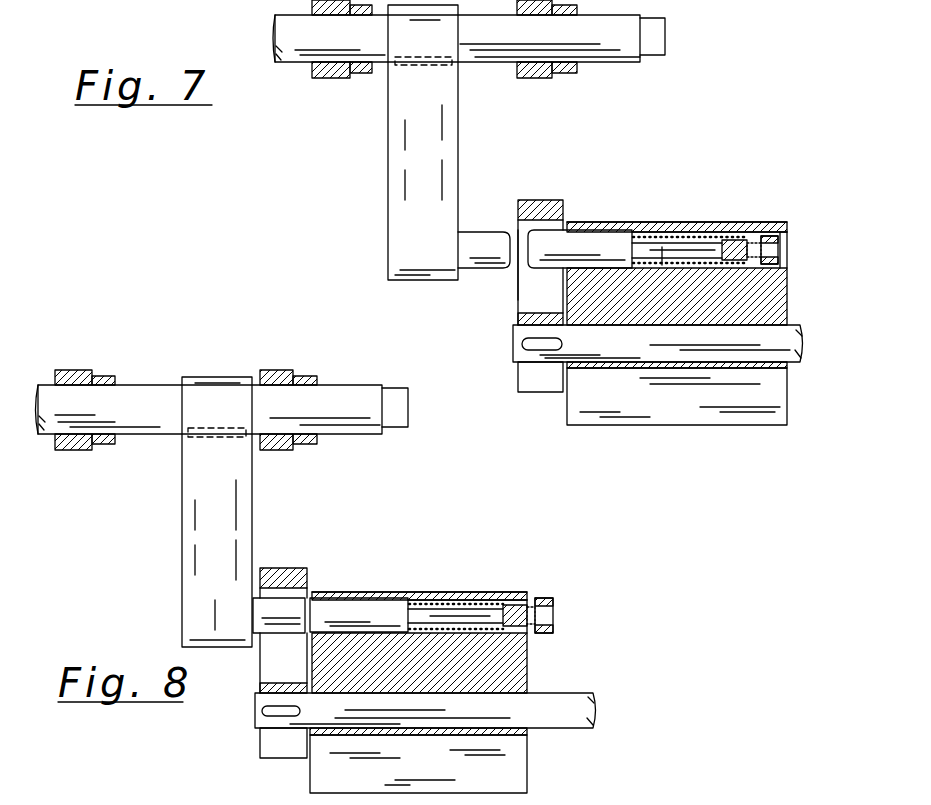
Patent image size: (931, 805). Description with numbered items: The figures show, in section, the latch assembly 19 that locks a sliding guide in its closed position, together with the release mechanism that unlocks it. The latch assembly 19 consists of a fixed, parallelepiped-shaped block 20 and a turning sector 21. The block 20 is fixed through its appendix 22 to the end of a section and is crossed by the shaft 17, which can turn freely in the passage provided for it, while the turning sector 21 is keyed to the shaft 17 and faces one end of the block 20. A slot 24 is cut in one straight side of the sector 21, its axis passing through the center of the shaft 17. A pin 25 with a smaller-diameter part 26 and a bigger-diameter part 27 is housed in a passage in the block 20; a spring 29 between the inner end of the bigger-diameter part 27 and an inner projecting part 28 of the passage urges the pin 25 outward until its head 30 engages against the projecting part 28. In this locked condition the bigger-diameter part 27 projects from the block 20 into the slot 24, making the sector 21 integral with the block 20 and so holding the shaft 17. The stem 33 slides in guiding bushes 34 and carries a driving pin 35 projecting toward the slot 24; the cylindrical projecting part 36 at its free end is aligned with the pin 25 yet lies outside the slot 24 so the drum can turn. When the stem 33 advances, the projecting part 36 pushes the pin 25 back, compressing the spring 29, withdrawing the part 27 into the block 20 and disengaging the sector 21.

In FIG. 7, the shaft 17 is at (610, 348).
In FIG. 8, the shaft 17 is at (578, 708).
In FIG. 7, the latch assembly 19 is at (590, 195).
In FIG. 8, the latch assembly 19 is at (337, 578).
In FIG. 7, the fixed block 20 is at (672, 233).
In FIG. 8, the fixed block 20 is at (447, 598).
In FIG. 7, the turning sector 21 is at (520, 200).
In FIG. 8, the turning sector 21 is at (277, 568).
In FIG. 7, the appendix 22 is at (702, 408).
In FIG. 8, the appendix 22 is at (320, 767).
In FIG. 7, the slot 24 is at (519, 266).
In FIG. 7, the pin 25 is at (655, 215).
In FIG. 8, the pin 25 is at (434, 585).
In FIG. 7, the smaller-diameter part 26 is at (660, 265).
In FIG. 8, the smaller-diameter part 26 is at (465, 617).
In FIG. 7, the bigger-diameter part 27 is at (607, 245).
In FIG. 8, the bigger-diameter part 27 is at (362, 600).
In FIG. 7, the inner projecting part 28 is at (746, 240).
In FIG. 8, the inner projecting part 28 is at (500, 598).
In FIG. 7, the spring 29 is at (692, 226).
In FIG. 8, the spring 29 is at (493, 596).
In FIG. 7, the head 30 is at (777, 250).
In FIG. 8, the head 30 is at (557, 612).
In FIG. 7, the stem 33 is at (293, 29).
In FIG. 8, the stem 33 is at (133, 400).
In FIG. 7, the guiding bushes 34 is at (327, 78).
In FIG. 8, the guiding bushes 34 is at (78, 370).
In FIG. 7, the driving pin 35 is at (388, 130).
In FIG. 8, the driving pin 35 is at (183, 512).
In FIG. 7, the cylindrical projecting part 36 is at (477, 240).
In FIG. 8, the cylindrical projecting part 36 is at (255, 612).